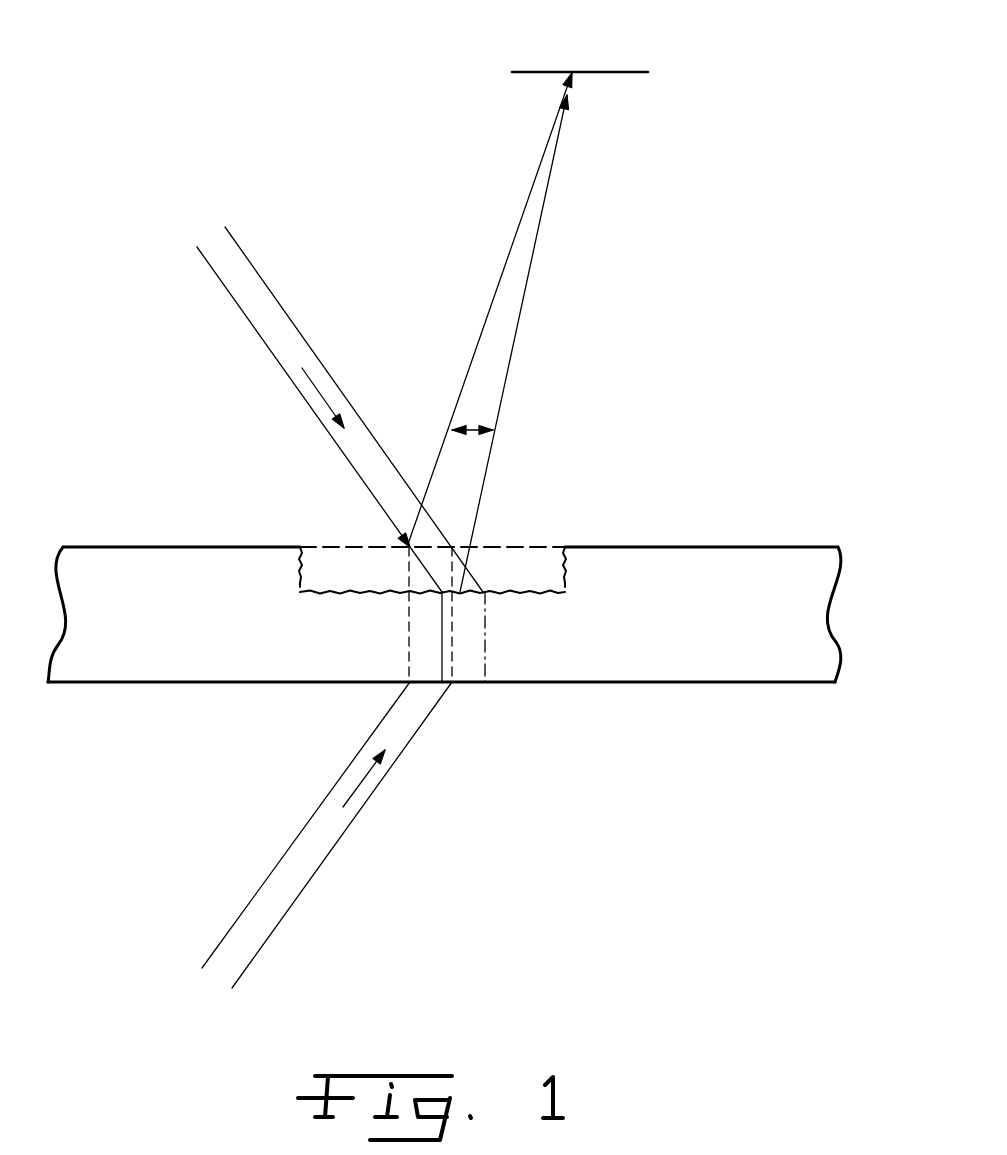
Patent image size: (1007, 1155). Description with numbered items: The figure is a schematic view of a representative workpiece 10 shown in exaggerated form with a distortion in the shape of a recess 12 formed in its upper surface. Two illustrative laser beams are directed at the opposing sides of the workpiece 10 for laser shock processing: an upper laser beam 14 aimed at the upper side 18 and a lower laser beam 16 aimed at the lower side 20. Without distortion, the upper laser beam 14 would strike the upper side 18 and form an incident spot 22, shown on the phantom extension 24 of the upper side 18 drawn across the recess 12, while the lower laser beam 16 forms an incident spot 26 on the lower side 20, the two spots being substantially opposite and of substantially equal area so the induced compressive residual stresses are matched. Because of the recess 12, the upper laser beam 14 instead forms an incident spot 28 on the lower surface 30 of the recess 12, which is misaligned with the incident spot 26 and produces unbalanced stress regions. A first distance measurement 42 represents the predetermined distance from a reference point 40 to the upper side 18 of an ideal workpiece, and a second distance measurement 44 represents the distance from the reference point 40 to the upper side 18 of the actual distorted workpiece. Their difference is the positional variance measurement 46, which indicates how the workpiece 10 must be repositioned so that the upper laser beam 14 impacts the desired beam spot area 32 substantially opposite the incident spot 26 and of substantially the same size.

The workpiece 10 is at (463, 583).
The recess 12 is at (444, 594).
The upper laser beam 14 is at (272, 288).
The lower laser beam 16 is at (288, 908).
The upper side 18 is at (140, 546).
The lower side 20 is at (158, 684).
The incident spot 22 is at (445, 501).
The phantom extension 24 is at (342, 552).
The incident spot 26 is at (423, 687).
The incident spot 28 is at (473, 587).
The lower surface 30 is at (538, 593).
The beam spot area 32 is at (425, 592).
The reference point 40 is at (627, 72).
The first distance measurement 42 is at (509, 258).
The second distance measurement 44 is at (531, 270).
The positional variance measurement 46 is at (475, 430).